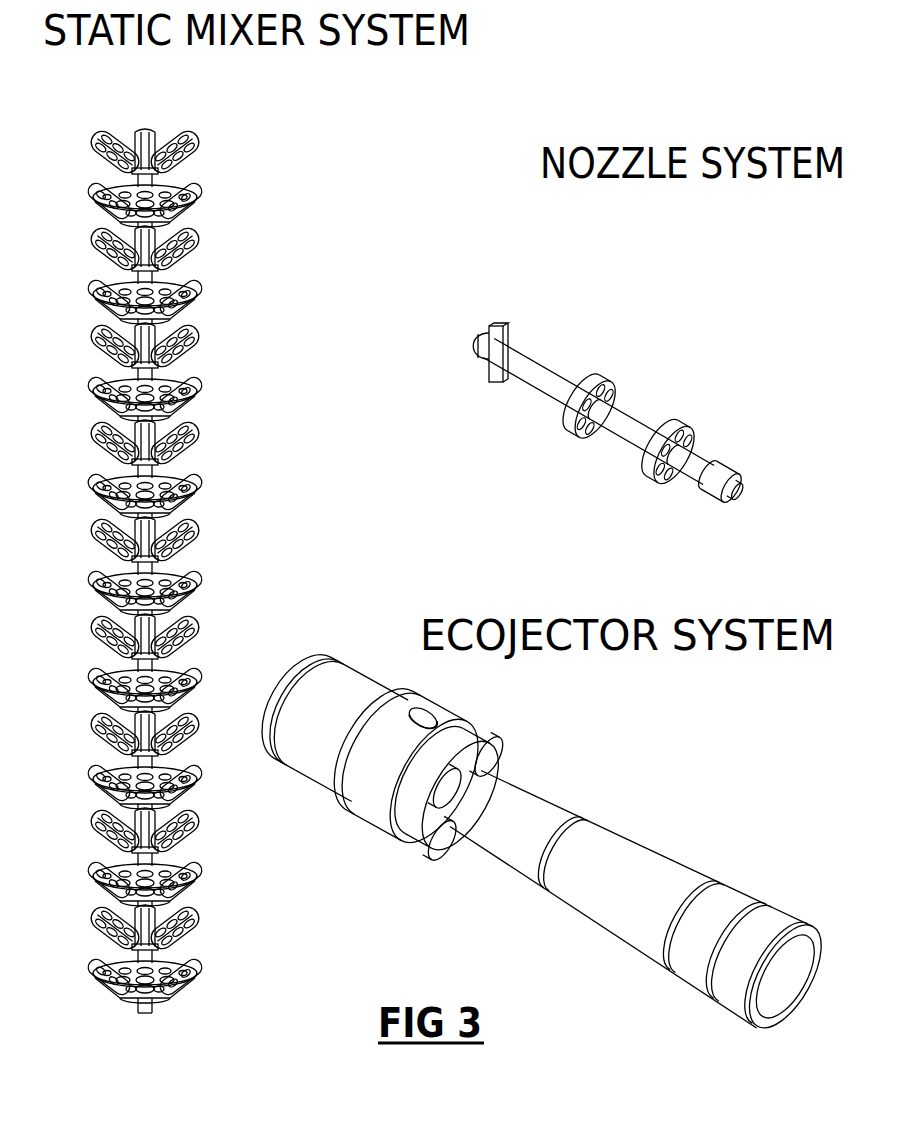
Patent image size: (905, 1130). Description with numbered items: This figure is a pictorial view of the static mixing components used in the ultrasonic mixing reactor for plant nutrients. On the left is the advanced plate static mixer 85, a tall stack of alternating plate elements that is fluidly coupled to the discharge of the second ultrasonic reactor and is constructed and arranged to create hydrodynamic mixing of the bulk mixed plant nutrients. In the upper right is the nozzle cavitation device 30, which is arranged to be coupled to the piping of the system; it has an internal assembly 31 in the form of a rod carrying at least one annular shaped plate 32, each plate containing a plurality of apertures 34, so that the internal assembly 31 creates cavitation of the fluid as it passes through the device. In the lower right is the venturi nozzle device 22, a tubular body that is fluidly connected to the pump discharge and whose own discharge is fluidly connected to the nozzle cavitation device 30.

The advanced plate static mixer 85 is at (237, 558).
The nozzle cavitation device 30 is at (574, 390).
The internal assembly 31 is at (615, 420).
The annular shaped plate 32 is at (628, 429).
The apertures 34 is at (718, 400).
The venturi nozzle device 22 is at (540, 840).